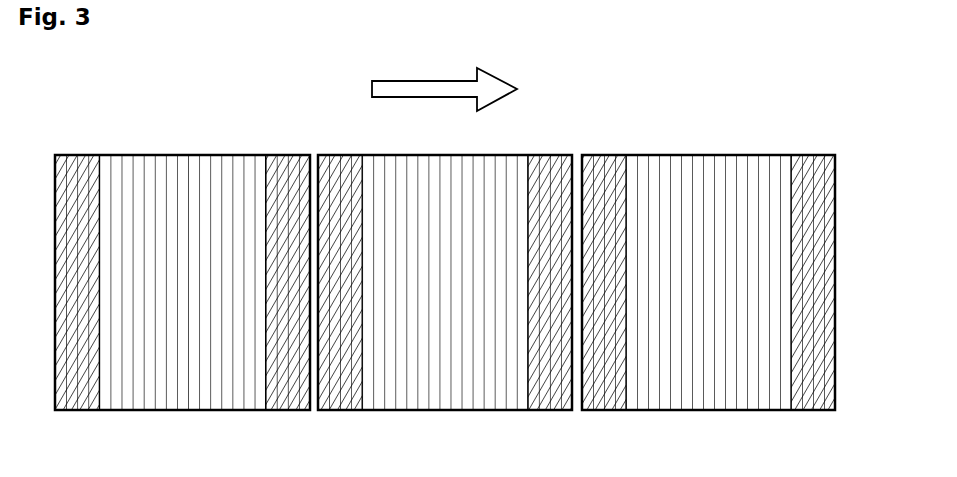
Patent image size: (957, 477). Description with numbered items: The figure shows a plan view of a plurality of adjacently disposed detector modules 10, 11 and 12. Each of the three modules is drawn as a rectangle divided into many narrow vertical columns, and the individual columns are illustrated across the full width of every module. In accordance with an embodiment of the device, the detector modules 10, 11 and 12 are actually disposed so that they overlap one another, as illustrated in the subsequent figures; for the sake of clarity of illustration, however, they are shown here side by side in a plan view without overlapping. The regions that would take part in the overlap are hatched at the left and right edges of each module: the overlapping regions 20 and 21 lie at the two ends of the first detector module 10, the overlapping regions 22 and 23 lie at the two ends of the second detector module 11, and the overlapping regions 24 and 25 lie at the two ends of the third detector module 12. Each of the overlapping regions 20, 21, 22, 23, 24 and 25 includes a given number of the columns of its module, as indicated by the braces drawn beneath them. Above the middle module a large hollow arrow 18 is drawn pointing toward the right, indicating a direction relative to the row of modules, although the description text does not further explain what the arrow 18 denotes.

The detector module 10 is at (182, 287).
The detector module 11 is at (445, 287).
The detector module 12 is at (708, 287).
The direction of movement arrow 18 is at (428, 92).
The overlapping region 20 is at (55, 412).
The overlapping region 21 is at (266, 412).
The overlapping region 22 is at (318, 412).
The overlapping region 23 is at (528, 412).
The overlapping region 24 is at (582, 412).
The overlapping region 25 is at (835, 412).